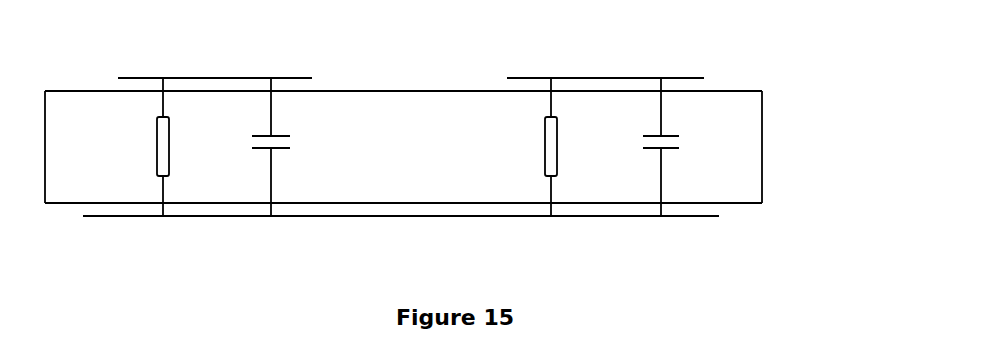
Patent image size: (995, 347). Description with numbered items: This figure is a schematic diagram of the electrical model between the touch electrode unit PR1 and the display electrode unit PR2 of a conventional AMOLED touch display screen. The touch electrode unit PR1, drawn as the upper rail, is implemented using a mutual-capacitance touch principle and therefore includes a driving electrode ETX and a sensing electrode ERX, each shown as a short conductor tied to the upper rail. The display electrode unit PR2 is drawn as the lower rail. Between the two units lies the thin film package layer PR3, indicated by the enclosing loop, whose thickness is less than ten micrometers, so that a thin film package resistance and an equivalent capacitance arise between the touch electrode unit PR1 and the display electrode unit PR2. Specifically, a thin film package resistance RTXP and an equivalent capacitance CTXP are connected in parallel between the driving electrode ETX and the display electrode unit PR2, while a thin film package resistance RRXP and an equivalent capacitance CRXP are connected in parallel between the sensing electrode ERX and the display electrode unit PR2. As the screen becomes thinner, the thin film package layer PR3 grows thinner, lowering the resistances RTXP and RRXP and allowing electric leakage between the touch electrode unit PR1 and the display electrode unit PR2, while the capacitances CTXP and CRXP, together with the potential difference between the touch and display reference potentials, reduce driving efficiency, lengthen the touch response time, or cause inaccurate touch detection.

The touch electrode unit PR1 is at (403, 124).
The display electrode unit PR2 is at (403, 229).
The thin film package layer PR3 is at (777, 106).
The driving electrode ETX is at (215, 60).
The sensing electrode ERX is at (605, 60).
The thin film package resistance RTXP is at (187, 147).
The equivalent capacitance CTXP is at (297, 147).
The thin film package resistance RRXP is at (576, 147).
The equivalent capacitance CRXP is at (687, 147).